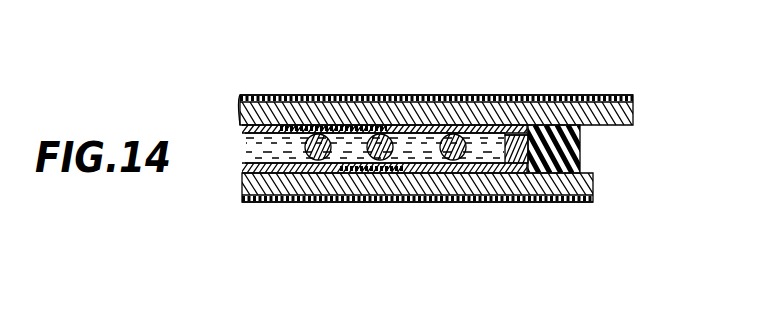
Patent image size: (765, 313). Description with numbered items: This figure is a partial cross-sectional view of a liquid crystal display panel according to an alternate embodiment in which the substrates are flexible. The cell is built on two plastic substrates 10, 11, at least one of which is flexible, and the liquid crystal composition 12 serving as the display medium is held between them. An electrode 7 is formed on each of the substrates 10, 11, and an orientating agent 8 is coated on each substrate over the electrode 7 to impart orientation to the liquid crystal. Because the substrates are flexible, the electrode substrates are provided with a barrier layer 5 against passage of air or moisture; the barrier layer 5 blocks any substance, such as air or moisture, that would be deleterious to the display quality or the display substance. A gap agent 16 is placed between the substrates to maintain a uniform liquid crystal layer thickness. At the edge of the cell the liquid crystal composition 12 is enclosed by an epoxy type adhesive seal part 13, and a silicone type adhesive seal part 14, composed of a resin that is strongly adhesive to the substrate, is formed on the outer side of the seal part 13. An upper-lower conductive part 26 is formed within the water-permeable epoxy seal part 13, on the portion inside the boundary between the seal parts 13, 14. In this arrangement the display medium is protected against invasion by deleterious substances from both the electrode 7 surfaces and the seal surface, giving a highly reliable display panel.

The barrier layer 5 is at (563, 98).
The electrode 7 is at (339, 128).
The orientating agent 8 is at (266, 126).
The plastic substrate 10 is at (585, 183).
The plastic substrate 11 is at (620, 117).
The liquid crystal composition 12 is at (415, 152).
The epoxy type adhesive seal part 13 is at (530, 173).
The silicone type adhesive seal part 14 is at (582, 156).
The gap agent 16 is at (423, 136).
The upper-lower conductive part 26 is at (519, 137).